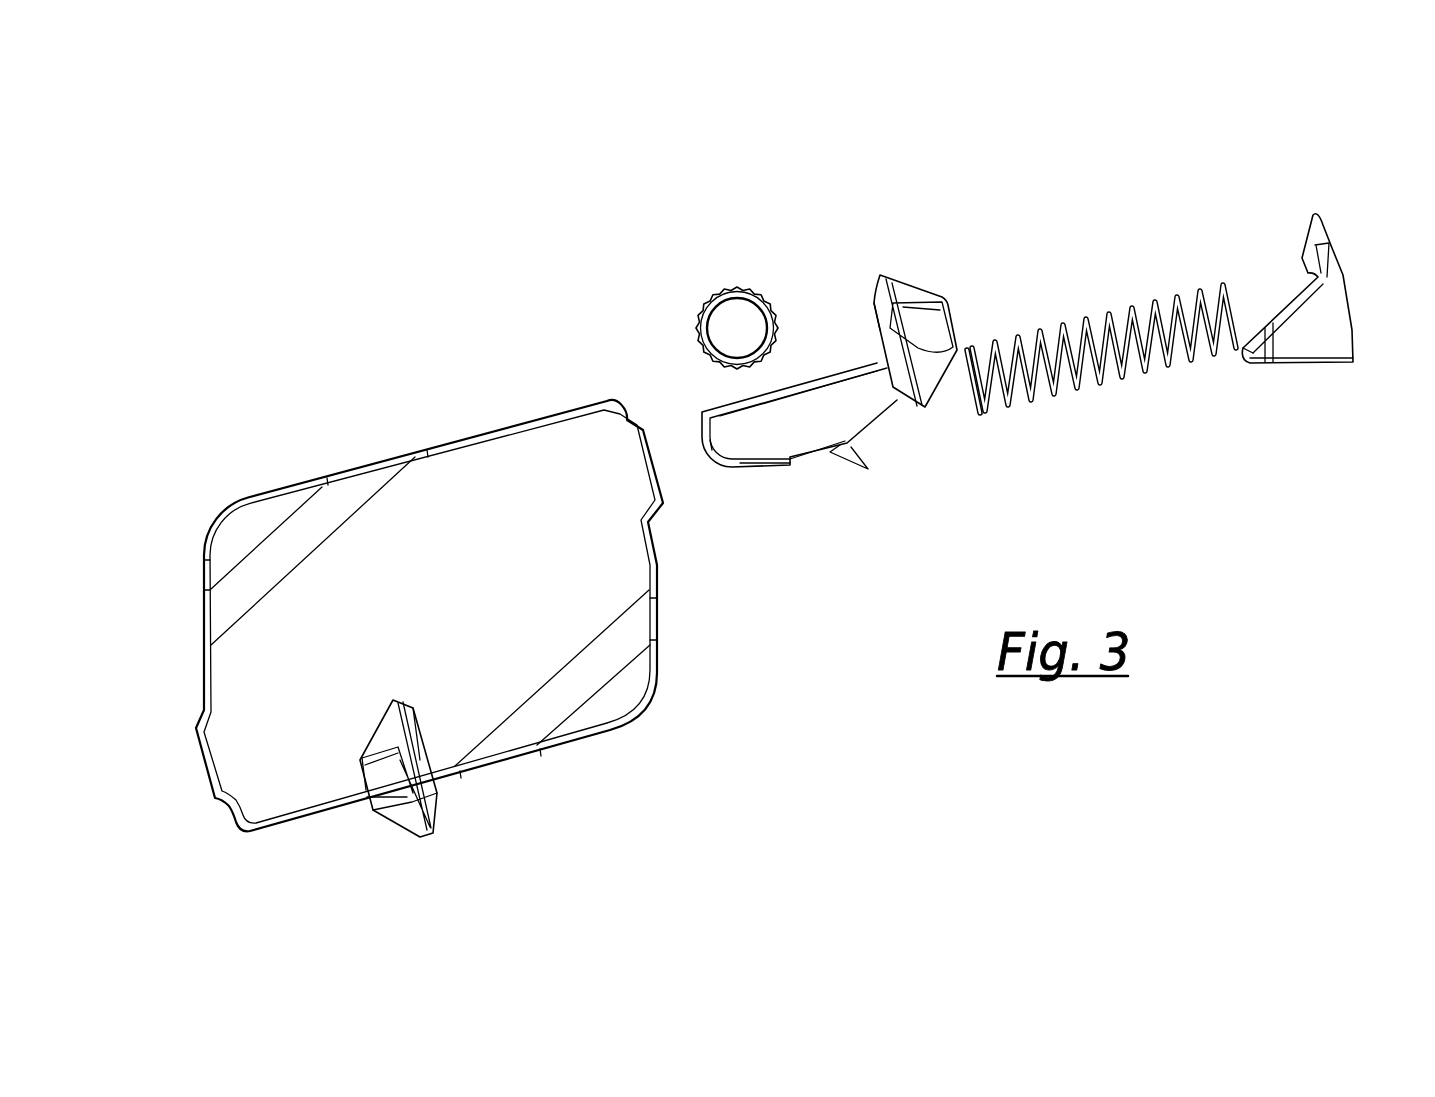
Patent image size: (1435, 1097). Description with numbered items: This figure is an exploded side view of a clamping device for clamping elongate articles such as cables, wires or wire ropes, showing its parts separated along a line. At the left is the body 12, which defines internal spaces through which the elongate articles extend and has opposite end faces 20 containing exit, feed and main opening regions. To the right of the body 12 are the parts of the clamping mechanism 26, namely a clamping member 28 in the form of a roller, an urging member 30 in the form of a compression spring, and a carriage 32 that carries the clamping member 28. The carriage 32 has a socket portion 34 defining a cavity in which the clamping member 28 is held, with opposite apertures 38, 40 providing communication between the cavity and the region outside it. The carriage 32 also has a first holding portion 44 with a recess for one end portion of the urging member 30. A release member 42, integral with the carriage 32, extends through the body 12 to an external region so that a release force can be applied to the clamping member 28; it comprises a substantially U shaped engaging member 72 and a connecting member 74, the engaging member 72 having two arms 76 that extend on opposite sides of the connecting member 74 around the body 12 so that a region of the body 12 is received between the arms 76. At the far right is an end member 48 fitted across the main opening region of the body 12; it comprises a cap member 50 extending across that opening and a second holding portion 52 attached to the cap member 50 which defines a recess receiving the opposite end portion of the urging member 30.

The body 12 is at (660, 659).
The end face 20 is at (205, 607).
The clamping mechanism 26 is at (761, 274).
The clamping member 28 is at (720, 294).
The urging member 30 is at (1068, 329).
The carriage 32 is at (860, 430).
The socket portion 34 is at (743, 440).
The aperture 38 is at (767, 439).
The aperture 40 is at (778, 457).
The release member 42 is at (914, 279).
The first holding portion 44 is at (833, 407).
The end member 48 is at (1325, 222).
The cap member 50 is at (1312, 298).
The second holding portion 52 is at (1250, 356).
The U shaped engaging member 72 is at (375, 777).
The connecting member 74 is at (872, 330).
The arm 76 is at (383, 728).